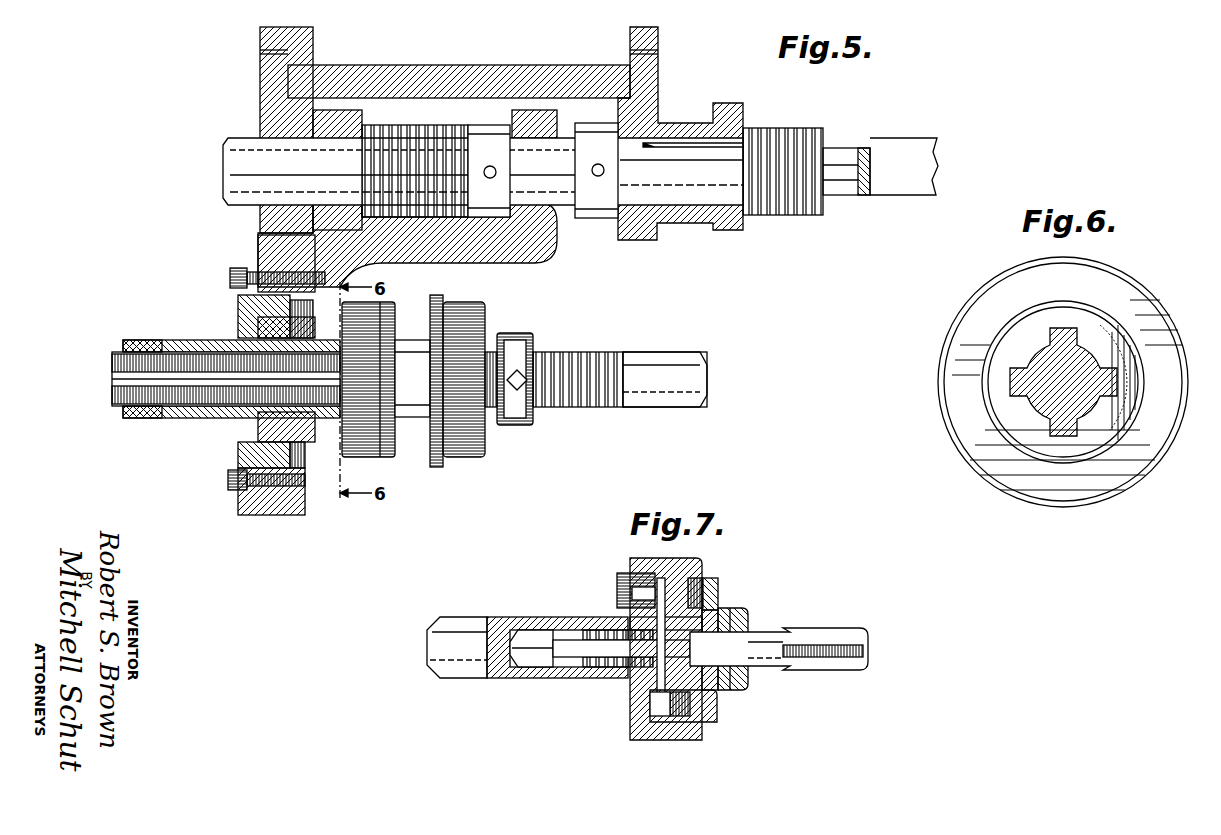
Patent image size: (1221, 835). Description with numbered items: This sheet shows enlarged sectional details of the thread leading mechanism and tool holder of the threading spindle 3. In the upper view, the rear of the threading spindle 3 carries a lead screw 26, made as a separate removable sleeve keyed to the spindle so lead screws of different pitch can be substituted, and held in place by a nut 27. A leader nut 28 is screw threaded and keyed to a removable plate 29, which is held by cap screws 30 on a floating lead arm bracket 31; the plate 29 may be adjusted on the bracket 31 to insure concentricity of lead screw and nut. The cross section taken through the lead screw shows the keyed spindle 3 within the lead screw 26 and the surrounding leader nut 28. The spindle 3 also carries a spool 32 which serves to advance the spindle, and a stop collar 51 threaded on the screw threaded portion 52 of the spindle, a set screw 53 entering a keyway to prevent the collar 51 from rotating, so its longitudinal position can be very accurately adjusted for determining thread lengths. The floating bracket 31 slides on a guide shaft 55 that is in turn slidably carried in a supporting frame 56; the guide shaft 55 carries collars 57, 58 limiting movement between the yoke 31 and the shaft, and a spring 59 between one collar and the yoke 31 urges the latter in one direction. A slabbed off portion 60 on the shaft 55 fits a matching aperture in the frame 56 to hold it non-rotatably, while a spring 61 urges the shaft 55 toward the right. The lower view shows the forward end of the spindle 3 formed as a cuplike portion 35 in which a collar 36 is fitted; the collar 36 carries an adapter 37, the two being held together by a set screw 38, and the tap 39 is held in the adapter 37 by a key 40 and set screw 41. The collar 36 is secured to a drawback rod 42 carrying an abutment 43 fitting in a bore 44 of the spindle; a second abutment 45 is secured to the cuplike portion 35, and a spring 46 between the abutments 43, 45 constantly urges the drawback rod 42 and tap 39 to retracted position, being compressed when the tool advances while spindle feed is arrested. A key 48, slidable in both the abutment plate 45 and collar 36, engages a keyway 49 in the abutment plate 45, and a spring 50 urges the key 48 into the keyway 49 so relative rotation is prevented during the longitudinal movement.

In FIG. 5, the threading spindle 3 is at (678, 352).
In FIG. 6, the threading spindle 3 is at (1040, 375).
In FIG. 7, the threading spindle 3 is at (458, 617).
In FIG. 5, the lead screw 26 is at (186, 418).
In FIG. 6, the lead screw 26 is at (1005, 385).
In FIG. 5, the nut 27 is at (134, 352).
In FIG. 5, the leader nut 28 is at (262, 430).
In FIG. 6, the leader nut 28 is at (960, 422).
In FIG. 5, the removable plate 29 is at (238, 458).
In FIG. 5, the cap screws 30 is at (230, 276).
In FIG. 5, the floating lead arm bracket 31 is at (445, 250).
In FIG. 5, the spool 32 is at (430, 457).
In FIG. 7, the cuplike portion 35 is at (648, 560).
In FIG. 7, the collar 36 is at (700, 590).
In FIG. 7, the adapter 37 is at (712, 610).
In FIG. 7, the set screw 38 is at (715, 592).
In FIG. 7, the tap 39 is at (782, 630).
In FIG. 7, the key 40 is at (740, 614).
In FIG. 7, the set screw 41 is at (735, 690).
In FIG. 7, the drawback rod 42 is at (620, 657).
In FIG. 7, the abutment 43 is at (548, 678).
In FIG. 7, the bore 44 is at (520, 662).
In FIG. 7, the second abutment 45 is at (650, 616).
In FIG. 7, the spring 46 is at (592, 668).
In FIG. 7, the key 48 is at (680, 716).
In FIG. 7, the keyway 49 is at (658, 708).
In FIG. 7, the spring 50 is at (700, 722).
In FIG. 5, the collar 51 is at (540, 320).
In FIG. 5, the screw threaded portion 52 is at (612, 352).
In FIG. 5, the set screw 53 is at (520, 372).
In FIG. 5, the guide shaft 55 is at (848, 190).
In FIG. 5, the supporting frame 56 is at (733, 222).
In FIG. 5, the collar 57 is at (485, 126).
In FIG. 5, the collar 58 is at (598, 218).
In FIG. 5, the spring 59 is at (430, 126).
In FIG. 5, the slabbed off portion 60 is at (700, 143).
In FIG. 5, the spring 61 is at (790, 215).